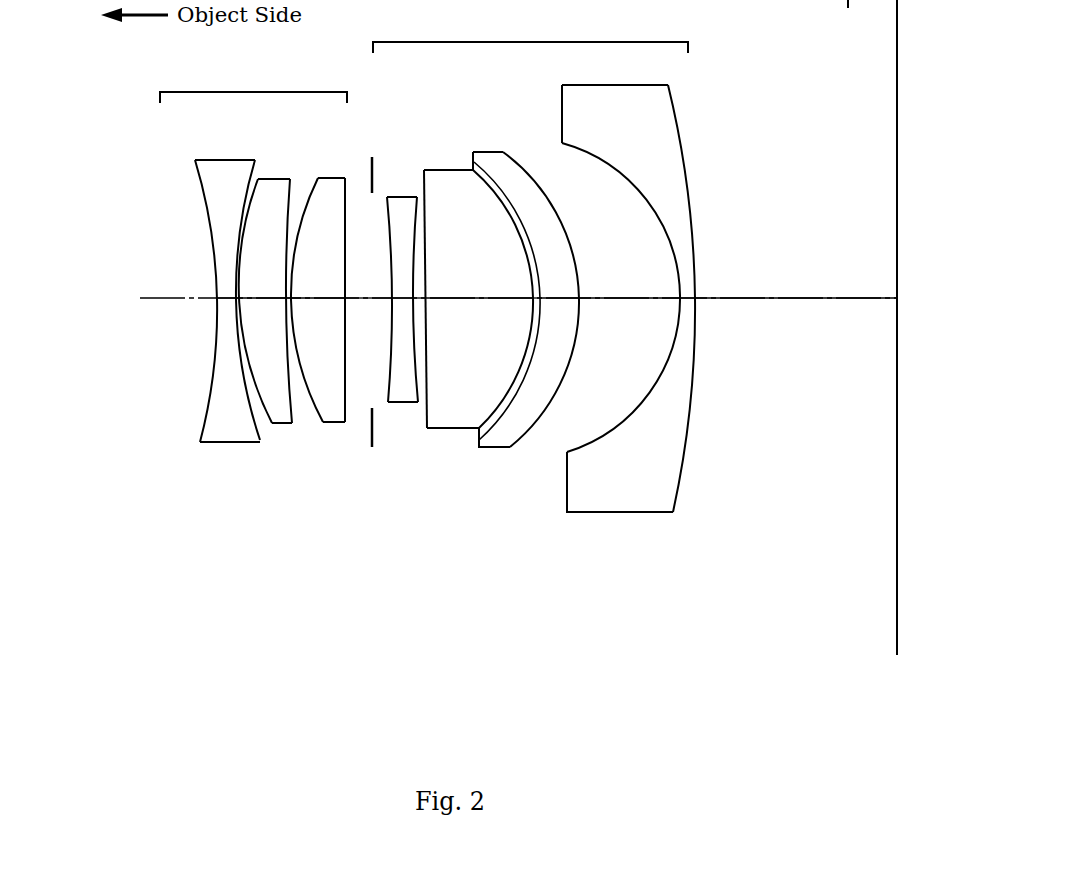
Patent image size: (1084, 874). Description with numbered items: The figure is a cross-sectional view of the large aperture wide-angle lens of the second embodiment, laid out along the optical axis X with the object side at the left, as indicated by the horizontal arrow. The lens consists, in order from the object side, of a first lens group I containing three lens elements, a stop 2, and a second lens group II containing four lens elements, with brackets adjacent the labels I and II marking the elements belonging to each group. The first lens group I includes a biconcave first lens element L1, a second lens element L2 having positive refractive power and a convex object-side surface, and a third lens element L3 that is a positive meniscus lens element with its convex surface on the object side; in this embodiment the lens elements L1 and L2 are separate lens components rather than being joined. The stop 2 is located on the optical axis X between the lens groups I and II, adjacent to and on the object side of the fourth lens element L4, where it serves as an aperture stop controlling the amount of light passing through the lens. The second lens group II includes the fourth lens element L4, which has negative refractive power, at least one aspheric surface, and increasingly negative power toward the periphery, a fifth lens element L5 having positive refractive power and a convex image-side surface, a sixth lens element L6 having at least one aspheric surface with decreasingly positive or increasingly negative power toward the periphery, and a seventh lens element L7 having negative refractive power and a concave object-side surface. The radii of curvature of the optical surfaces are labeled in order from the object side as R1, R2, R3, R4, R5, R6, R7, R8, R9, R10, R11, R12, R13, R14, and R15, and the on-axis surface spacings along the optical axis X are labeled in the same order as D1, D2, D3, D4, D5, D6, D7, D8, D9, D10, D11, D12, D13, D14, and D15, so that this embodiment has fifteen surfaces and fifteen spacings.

The optical axis X is at (157, 298).
The first lens group I is at (264, 251).
The second lens group II is at (552, 261).
The stop 2 is at (365, 308).
The first lens element L1 is at (208, 282).
The second lens element L2 is at (281, 273).
The third lens element L3 is at (331, 266).
The fourth lens element L4 is at (407, 267).
The fifth lens element L5 is at (478, 272).
The sixth lens element L6 is at (563, 281).
The seventh lens element L7 is at (659, 282).
The radius of curvature of first optical surface R1 is at (200, 194).
The radius of curvature of second optical surface R2 is at (249, 205).
The radius of curvature of third optical surface R3 is at (236, 222).
The radius of curvature of fourth optical surface R4 is at (290, 200).
The radius of curvature of fifth optical surface R5 is at (300, 205).
The radius of curvature of sixth optical surface R6 is at (350, 197).
The radius of curvature of seventh optical surface R7 is at (372, 437).
The radius of curvature of eighth optical surface R8 is at (388, 272).
The radius of curvature of ninth optical surface R9 is at (424, 262).
The radius of curvature of tenth optical surface R10 is at (425, 222).
The radius of curvature of eleventh optical surface R11 is at (530, 243).
The radius of curvature of twelfth optical surface R12 is at (540, 284).
The radius of curvature of thirteenth optical surface R13 is at (585, 300).
The radius of curvature of fourteenth optical surface R14 is at (646, 205).
The radius of curvature of fifteenth optical surface R15 is at (694, 240).
The on-axis surface spacing D1 is at (219, 305).
The on-axis surface spacing D2 is at (230, 294).
The on-axis surface spacing D3 is at (250, 300).
The on-axis surface spacing D4 is at (282, 300).
The on-axis surface spacing D5 is at (330, 300).
The on-axis surface spacing D6 is at (348, 302).
The on-axis surface spacing D7 is at (381, 298).
The on-axis surface spacing D8 is at (413, 300).
The on-axis surface spacing D9 is at (415, 300).
The on-axis surface spacing D10 is at (478, 283).
The on-axis surface spacing D11 is at (533, 301).
The on-axis surface spacing D12 is at (561, 302).
The on-axis surface spacing D13 is at (628, 283).
The on-axis surface spacing D14 is at (698, 283).
The on-axis surface spacing D15 is at (817, 279).